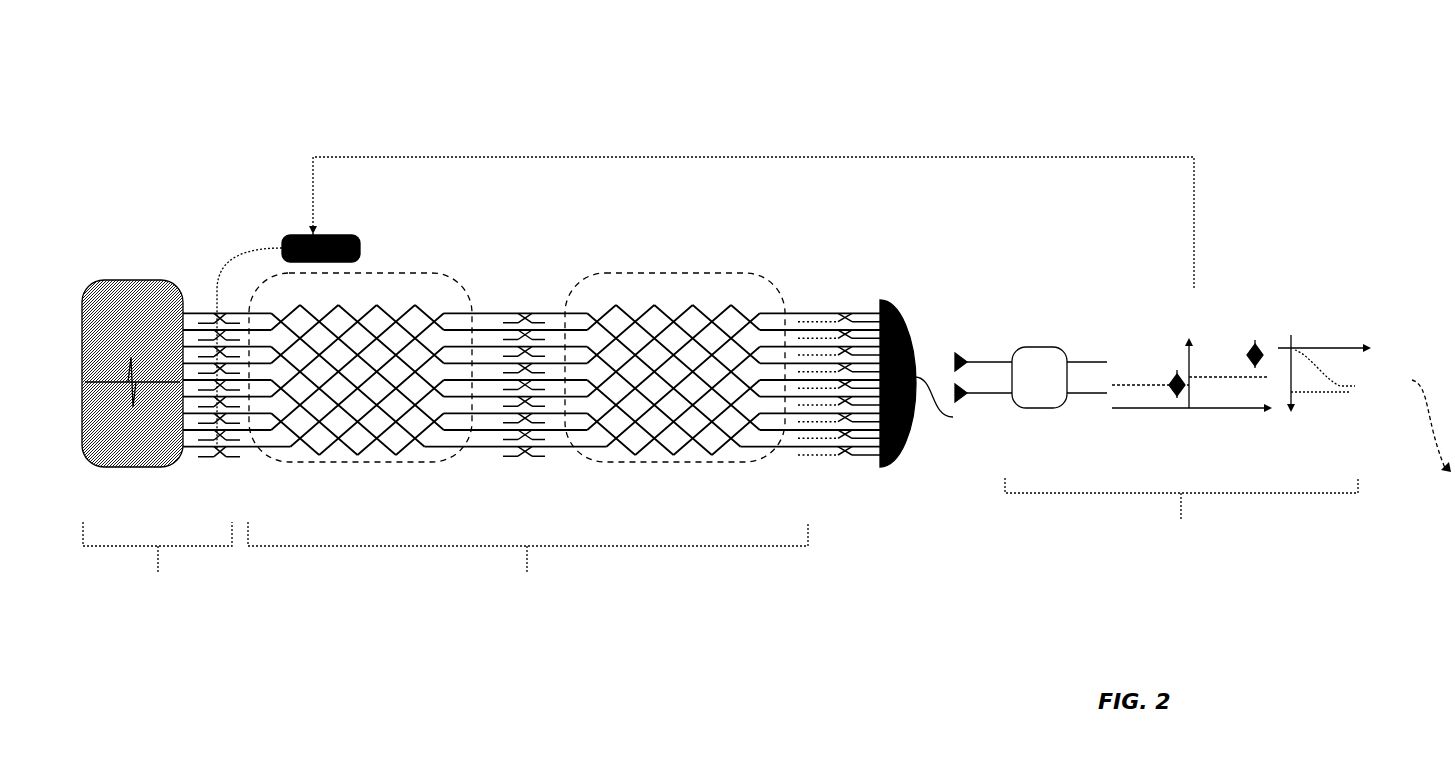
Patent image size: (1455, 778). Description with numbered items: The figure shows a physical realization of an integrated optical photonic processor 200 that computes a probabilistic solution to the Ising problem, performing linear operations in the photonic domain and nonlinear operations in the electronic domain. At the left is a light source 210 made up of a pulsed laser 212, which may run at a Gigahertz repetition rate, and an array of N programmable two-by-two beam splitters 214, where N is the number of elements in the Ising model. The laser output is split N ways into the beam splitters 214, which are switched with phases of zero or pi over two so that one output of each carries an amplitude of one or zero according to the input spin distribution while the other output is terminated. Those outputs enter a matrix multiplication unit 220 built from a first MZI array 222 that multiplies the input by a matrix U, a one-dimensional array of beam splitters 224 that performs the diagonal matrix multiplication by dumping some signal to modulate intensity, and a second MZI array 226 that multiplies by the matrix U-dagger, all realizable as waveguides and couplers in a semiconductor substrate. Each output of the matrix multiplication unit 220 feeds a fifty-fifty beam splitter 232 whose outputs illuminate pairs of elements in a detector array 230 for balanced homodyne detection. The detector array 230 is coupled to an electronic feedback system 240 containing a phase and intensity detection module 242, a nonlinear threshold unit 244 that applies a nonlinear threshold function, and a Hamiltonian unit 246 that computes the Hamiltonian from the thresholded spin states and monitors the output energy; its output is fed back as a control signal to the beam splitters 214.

The integrated optical photonic processor 200 is at (1088, 123).
The light source 210 is at (157, 566).
The pulsed laser 212 is at (132, 405).
The programmable 2×2 beam splitters 214 is at (217, 399).
The matrix multiplication unit 220 is at (521, 441).
The first MZI array 222 is at (357, 406).
The beam splitters 224 is at (524, 422).
The second MZI array 226 is at (673, 405).
The detector array 230 is at (906, 415).
The 50/50 beam splitter 232 is at (839, 371).
The electronic feedback system 240 is at (1228, 431).
The phase and intensity detection module 242 is at (1031, 411).
The nonlinear threshold unit 244 is at (1192, 408).
The Hamiltonian unit 246 is at (1330, 403).